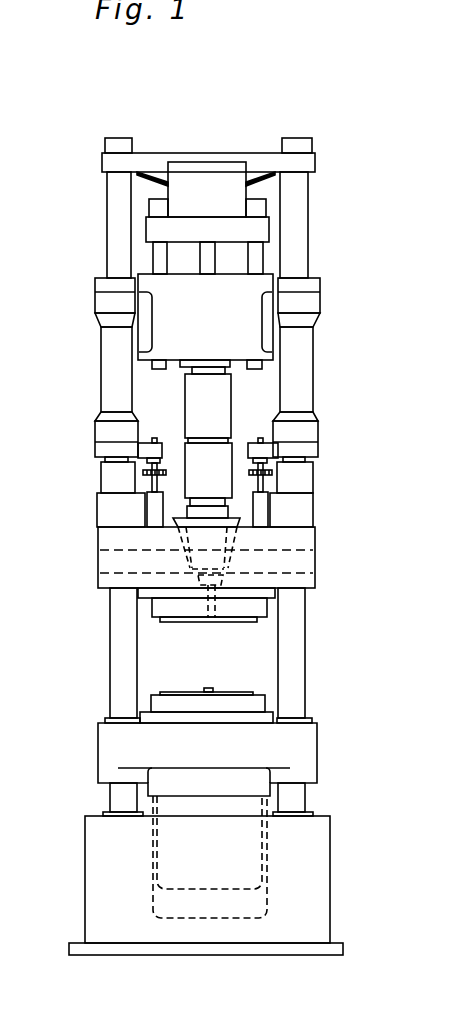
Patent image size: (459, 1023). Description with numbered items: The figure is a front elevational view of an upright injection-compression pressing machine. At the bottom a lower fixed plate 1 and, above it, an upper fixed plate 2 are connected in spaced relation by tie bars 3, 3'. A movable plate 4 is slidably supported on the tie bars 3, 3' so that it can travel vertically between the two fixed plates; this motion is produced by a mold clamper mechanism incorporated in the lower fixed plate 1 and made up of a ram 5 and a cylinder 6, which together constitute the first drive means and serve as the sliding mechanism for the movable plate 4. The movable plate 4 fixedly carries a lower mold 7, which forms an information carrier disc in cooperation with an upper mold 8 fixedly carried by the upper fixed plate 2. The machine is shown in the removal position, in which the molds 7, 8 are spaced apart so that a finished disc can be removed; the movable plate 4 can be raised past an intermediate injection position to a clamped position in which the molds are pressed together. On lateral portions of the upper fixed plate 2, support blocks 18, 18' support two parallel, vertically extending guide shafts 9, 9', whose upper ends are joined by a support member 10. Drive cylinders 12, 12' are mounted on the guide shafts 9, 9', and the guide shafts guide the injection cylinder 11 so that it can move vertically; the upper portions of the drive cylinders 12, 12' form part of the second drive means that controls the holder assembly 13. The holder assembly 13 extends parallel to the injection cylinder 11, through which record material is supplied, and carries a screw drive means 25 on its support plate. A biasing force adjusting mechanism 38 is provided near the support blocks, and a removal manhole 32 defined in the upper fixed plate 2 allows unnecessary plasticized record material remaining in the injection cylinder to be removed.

The lower fixed plate 1 is at (323, 828).
The upper fixed plate 2 is at (305, 535).
The tie bar 3 is at (334, 702).
The tie bar 3' is at (97, 702).
The movable plate 4 is at (303, 750).
The ram 5 is at (250, 858).
The cylinder 6 is at (250, 903).
The lower mold 7 is at (262, 702).
The upper mold 8 is at (257, 608).
The guide shaft 9 is at (336, 225).
The guide shaft 9' is at (93, 225).
The support member 10 is at (305, 162).
The injection cylinder 11 is at (220, 397).
The drive cylinder 12 is at (340, 367).
The drive cylinder 12' is at (93, 367).
The holder assembly 13 is at (243, 312).
The support block 18 is at (339, 480).
The support block 18' is at (96, 492).
The screw drive means 25 is at (232, 188).
The removal manhole 32 is at (305, 562).
The biasing force adjusting mechanism 38 is at (263, 480).